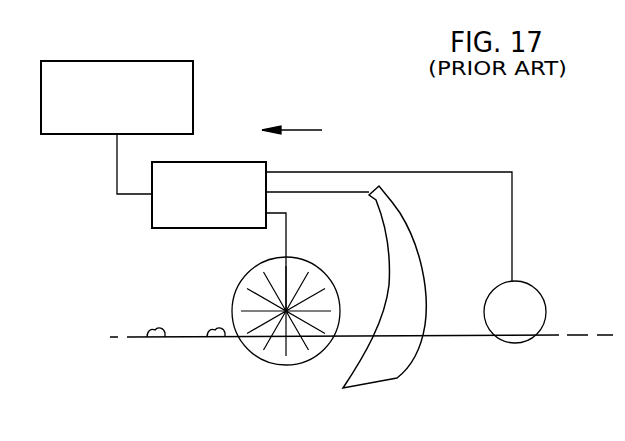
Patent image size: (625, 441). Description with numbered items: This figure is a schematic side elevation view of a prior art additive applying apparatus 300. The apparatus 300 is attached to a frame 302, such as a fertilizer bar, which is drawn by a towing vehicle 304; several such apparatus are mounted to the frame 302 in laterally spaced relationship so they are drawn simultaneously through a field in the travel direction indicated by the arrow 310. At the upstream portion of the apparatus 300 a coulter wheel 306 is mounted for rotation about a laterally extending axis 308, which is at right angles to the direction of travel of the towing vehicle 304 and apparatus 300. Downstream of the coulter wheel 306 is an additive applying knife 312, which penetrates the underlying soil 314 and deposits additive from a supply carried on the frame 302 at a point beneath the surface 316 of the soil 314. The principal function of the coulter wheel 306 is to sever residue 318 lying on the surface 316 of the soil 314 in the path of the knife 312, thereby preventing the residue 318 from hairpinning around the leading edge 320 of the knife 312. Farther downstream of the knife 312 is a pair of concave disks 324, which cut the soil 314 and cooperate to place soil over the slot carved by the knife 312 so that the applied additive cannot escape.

The additive applying apparatus 300 is at (393, 152).
The frame 302 is at (220, 214).
The towing vehicle 304 is at (131, 125).
The coulter wheel 306 is at (245, 276).
The laterally extending axis 308 is at (286, 311).
The arrow 310 is at (292, 130).
The additive applying knife 312 is at (413, 267).
The soil 314 is at (183, 352).
The surface 316 is at (467, 333).
The residue 318 is at (217, 335).
The leading edge 320 is at (385, 312).
The concave disks 324 is at (533, 293).